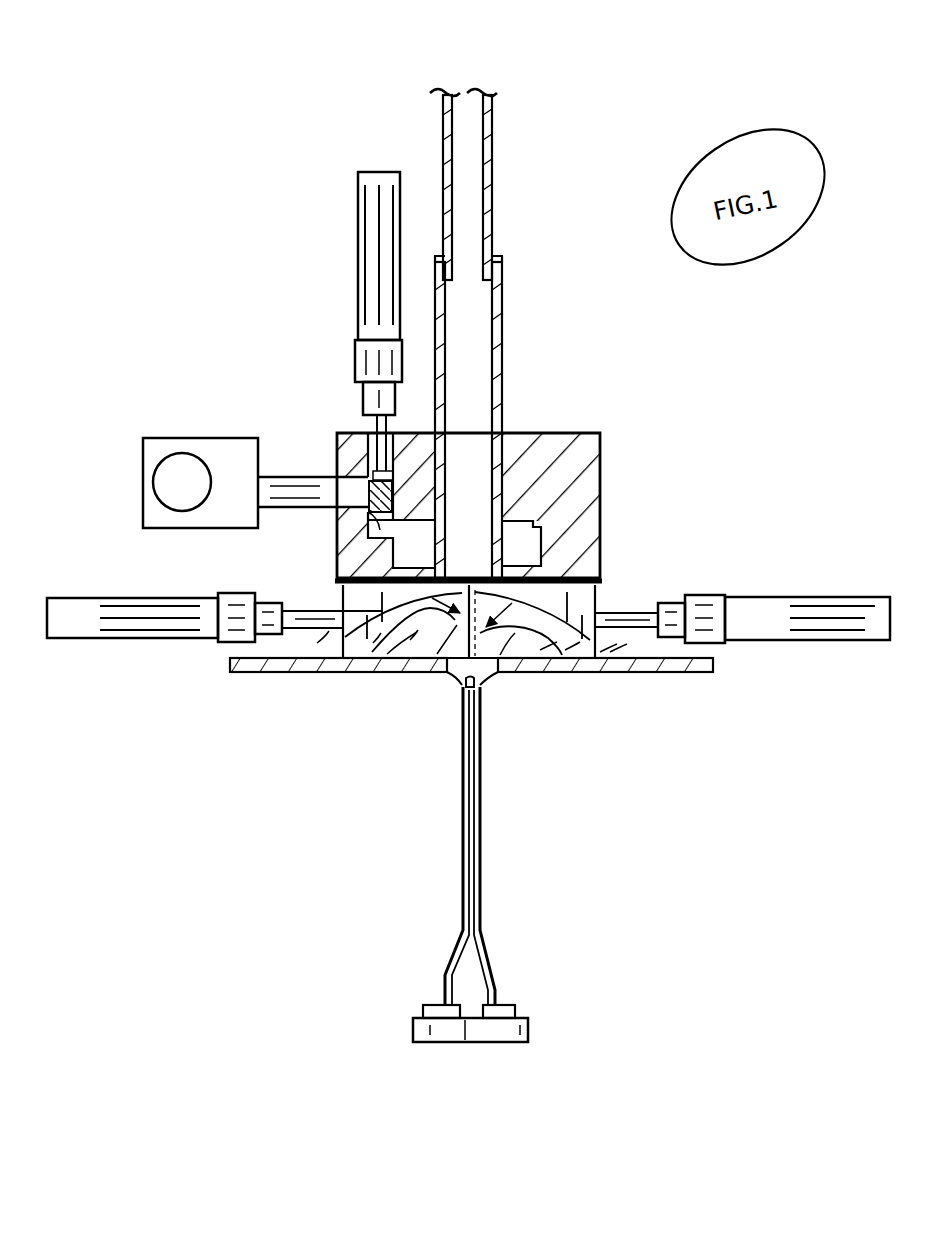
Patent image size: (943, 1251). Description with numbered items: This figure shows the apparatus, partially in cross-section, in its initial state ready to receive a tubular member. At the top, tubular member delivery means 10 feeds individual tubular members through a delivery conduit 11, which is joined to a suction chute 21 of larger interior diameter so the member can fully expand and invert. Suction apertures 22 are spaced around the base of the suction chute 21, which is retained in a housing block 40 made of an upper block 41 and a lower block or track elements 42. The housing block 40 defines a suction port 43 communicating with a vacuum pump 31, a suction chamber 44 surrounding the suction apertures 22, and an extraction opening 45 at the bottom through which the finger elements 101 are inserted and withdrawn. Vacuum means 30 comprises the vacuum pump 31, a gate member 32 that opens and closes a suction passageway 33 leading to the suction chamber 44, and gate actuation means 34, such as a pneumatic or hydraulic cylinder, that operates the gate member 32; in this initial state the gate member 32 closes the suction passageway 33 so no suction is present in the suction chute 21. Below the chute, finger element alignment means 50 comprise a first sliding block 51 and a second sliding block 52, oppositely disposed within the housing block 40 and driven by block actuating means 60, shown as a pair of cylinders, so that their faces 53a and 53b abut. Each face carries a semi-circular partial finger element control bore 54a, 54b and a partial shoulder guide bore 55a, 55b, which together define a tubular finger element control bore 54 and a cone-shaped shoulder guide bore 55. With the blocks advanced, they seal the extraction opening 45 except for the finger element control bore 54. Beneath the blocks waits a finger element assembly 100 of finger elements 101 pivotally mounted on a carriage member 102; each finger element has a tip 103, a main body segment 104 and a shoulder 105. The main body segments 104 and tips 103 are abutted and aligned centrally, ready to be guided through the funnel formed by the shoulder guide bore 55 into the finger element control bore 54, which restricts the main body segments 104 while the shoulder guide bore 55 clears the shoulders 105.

The tubular member delivery means 10 is at (533, 96).
The delivery conduit 11 is at (490, 150).
The suction chute 21 is at (500, 282).
The suction apertures 22 is at (540, 524).
The vacuum means 30 is at (242, 390).
The vacuum pump 31 is at (180, 437).
The gate member 32 is at (335, 548).
The suction passageway 33 is at (345, 510).
The gate actuation means 34 is at (358, 248).
The housing block 40 is at (627, 540).
The upper block 41 is at (600, 443).
The lower block or track elements 42 is at (700, 673).
The suction port 43 is at (372, 467).
The suction chamber 44 is at (590, 557).
The extraction opening 45 is at (557, 653).
The finger element alignment means 50 is at (89, 565).
The first sliding block 51 is at (627, 660).
The second sliding block 52 is at (410, 640).
The face 53a is at (483, 660).
The face 53b is at (457, 660).
The finger element control bore 54 is at (383, 592).
The partial finger element control bore 54a is at (617, 660).
The partial finger element control bore 54b is at (317, 643).
The shoulder guide bore 55 is at (477, 602).
The partial shoulder guide bore 55a is at (580, 657).
The partial shoulder guide bore 55b is at (373, 643).
The block actuating means 60 is at (87, 640).
The finger element assembly 100 is at (415, 858).
The finger elements 101 is at (480, 840).
The carriage member 102 is at (525, 1040).
The tip 103 is at (462, 676).
The main body segment 104 is at (468, 760).
The shoulder 105 is at (470, 1025).